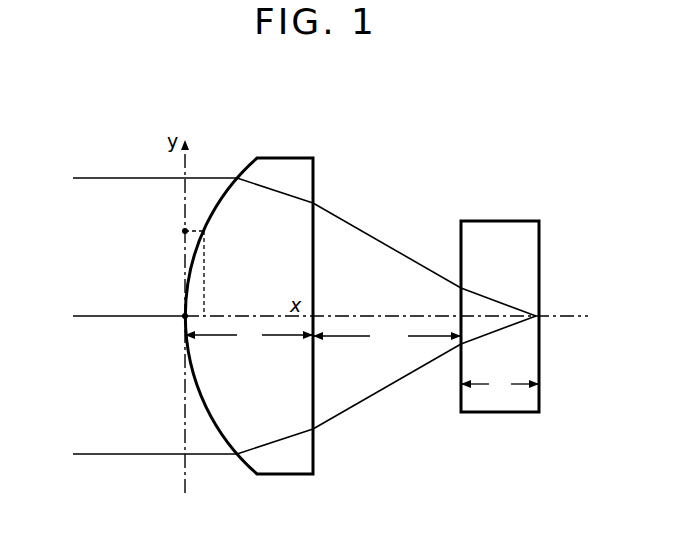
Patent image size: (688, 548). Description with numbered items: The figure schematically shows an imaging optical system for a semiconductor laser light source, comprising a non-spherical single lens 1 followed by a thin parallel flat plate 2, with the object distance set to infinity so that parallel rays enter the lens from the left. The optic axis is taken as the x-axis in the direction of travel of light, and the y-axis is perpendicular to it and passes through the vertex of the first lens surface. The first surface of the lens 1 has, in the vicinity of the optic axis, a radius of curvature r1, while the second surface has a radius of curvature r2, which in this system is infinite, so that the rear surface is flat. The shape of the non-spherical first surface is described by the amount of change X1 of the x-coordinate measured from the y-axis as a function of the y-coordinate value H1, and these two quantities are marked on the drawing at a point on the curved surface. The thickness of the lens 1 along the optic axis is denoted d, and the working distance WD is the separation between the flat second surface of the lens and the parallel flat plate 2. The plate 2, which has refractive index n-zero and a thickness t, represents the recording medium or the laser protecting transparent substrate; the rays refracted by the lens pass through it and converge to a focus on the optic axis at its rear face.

The non-spherical single lens 1 is at (287, 163).
The parallel flat plate 2 is at (535, 233).
The y-coordinate value of the lens surface H1 is at (179, 270).
The radius of curvature of the first surface r1 is at (185, 334).
The radius of curvature of the second surface r2 is at (313, 300).
The amount of change of the x-coordinate X1 is at (214, 363).
The thickness of the lens d is at (249, 335).
The working distance WD is at (387, 336).
The thickness of the parallel flat plate t is at (500, 384).